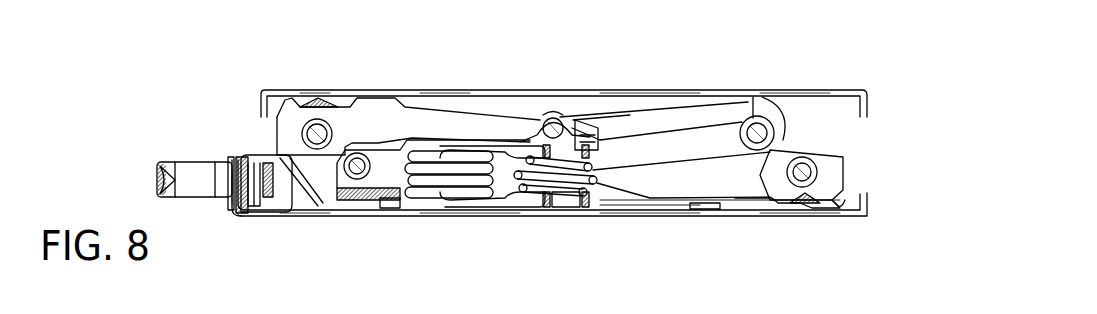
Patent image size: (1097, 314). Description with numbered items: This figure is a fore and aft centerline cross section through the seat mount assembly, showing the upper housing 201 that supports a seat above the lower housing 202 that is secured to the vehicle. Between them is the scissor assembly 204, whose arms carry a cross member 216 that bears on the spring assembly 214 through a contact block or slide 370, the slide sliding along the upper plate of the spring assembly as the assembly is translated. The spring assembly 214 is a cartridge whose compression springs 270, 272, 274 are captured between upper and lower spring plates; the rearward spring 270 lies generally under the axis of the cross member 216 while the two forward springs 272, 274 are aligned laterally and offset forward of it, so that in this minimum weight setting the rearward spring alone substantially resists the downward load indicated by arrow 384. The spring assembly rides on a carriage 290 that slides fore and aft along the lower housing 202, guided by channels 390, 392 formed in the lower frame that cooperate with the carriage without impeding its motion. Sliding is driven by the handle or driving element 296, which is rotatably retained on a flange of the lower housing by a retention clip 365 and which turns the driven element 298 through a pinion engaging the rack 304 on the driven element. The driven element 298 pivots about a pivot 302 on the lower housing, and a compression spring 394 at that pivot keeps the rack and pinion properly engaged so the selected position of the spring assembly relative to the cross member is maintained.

The upper housing 201 is at (832, 90).
The lower housing 202 is at (840, 217).
The scissor assembly 204 is at (862, 147).
The spring assembly 214 is at (619, 141).
The cross member 216 is at (550, 112).
The compression spring 270 is at (588, 213).
The compression spring 272 is at (455, 193).
The compression spring 274 is at (450, 174).
The carriage 290 is at (630, 213).
The driving element 296 is at (212, 160).
The driven element 298 is at (255, 155).
The pivot 302 is at (322, 210).
The rack 304 is at (245, 222).
The retention clip 365 is at (226, 215).
The slide 370 is at (578, 108).
The load 384 is at (555, 110).
The channel 390 is at (702, 212).
The channel 392 is at (746, 210).
The compression spring 394 is at (380, 213).